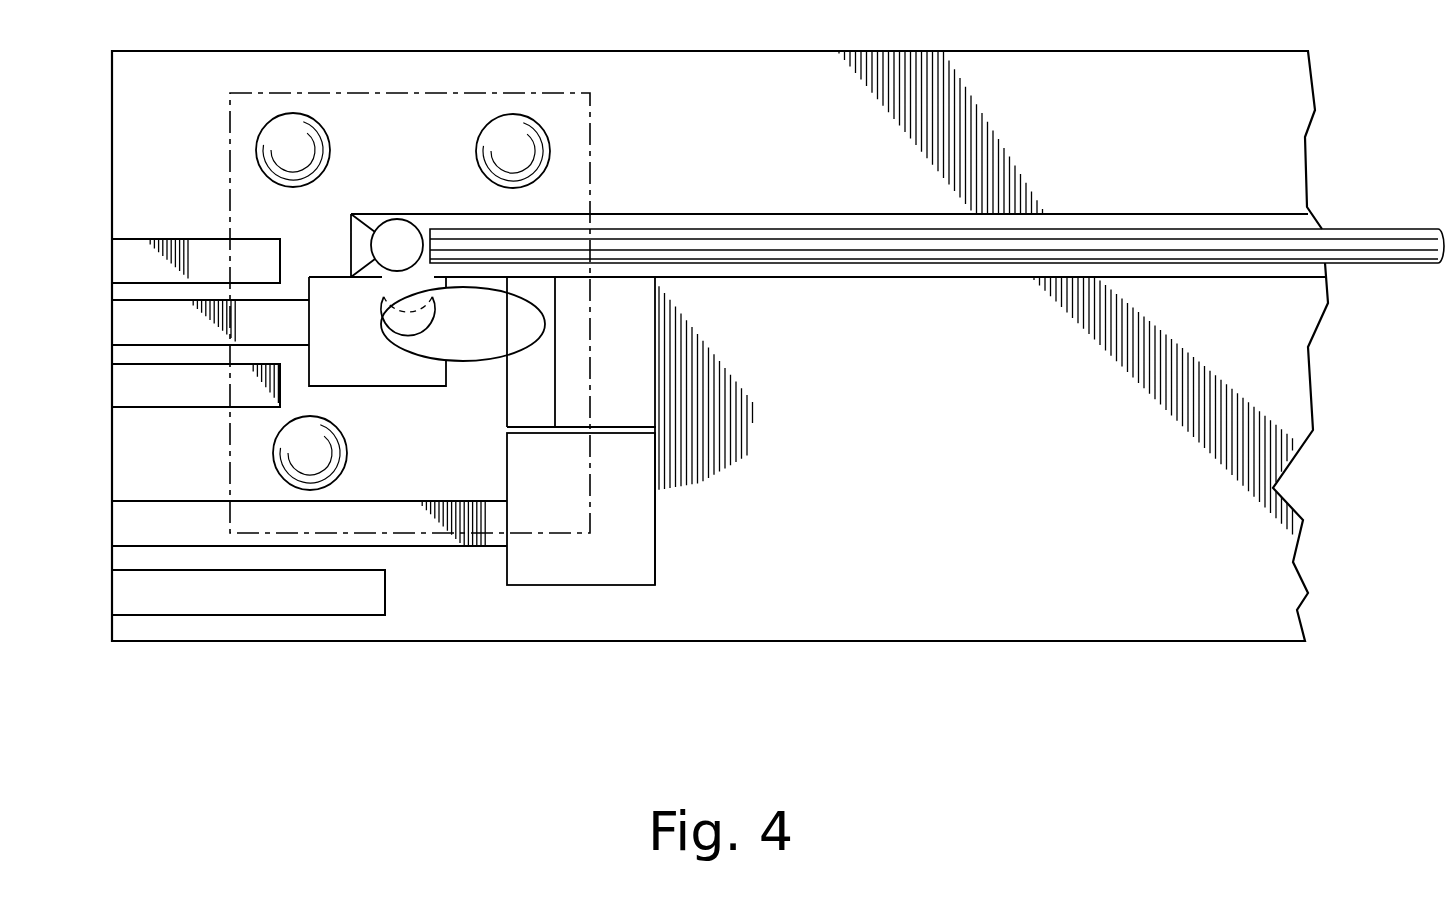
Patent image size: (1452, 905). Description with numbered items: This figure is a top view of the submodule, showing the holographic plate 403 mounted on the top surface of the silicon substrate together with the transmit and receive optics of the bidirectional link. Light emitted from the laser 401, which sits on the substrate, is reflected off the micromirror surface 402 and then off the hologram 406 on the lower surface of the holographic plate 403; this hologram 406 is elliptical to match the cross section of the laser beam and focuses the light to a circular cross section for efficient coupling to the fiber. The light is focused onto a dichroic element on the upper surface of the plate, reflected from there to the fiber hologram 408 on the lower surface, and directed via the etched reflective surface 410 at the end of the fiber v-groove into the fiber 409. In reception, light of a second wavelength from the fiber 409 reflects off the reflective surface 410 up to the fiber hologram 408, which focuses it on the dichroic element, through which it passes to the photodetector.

The laser 401 is at (343, 387).
The micromirror surface 402 is at (523, 395).
The holographic plate 403 is at (368, 296).
The hologram 406 is at (490, 363).
The fiber hologram 408 is at (394, 230).
The fiber 409 is at (883, 243).
The reflective surface 410 is at (340, 244).